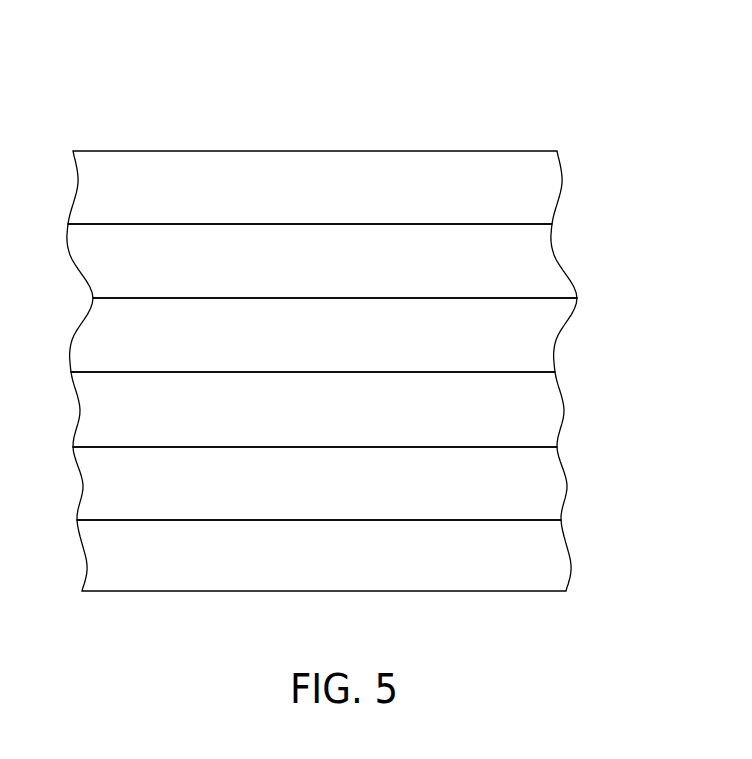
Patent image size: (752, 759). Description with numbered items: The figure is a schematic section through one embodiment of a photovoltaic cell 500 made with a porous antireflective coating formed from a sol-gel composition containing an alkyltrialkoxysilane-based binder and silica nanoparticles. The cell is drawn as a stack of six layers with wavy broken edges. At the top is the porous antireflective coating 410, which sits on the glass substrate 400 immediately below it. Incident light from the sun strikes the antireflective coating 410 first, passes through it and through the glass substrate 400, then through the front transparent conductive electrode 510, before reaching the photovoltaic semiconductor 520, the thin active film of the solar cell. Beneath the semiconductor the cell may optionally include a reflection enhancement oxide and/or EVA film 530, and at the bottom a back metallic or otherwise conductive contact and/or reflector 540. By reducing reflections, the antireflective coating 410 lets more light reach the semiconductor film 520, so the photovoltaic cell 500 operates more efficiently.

The photovoltaic cell 500 is at (545, 88).
The porous antireflective coating 410 is at (352, 201).
The glass substrate 400 is at (352, 273).
The front transparent conductive electrode 510 is at (352, 347).
The photovoltaic semiconductor 520 is at (352, 421).
The reflection enhancement oxide and/or EVA film 530 is at (352, 496).
The back metallic or otherwise conductive contact and/or reflector 540 is at (352, 569).